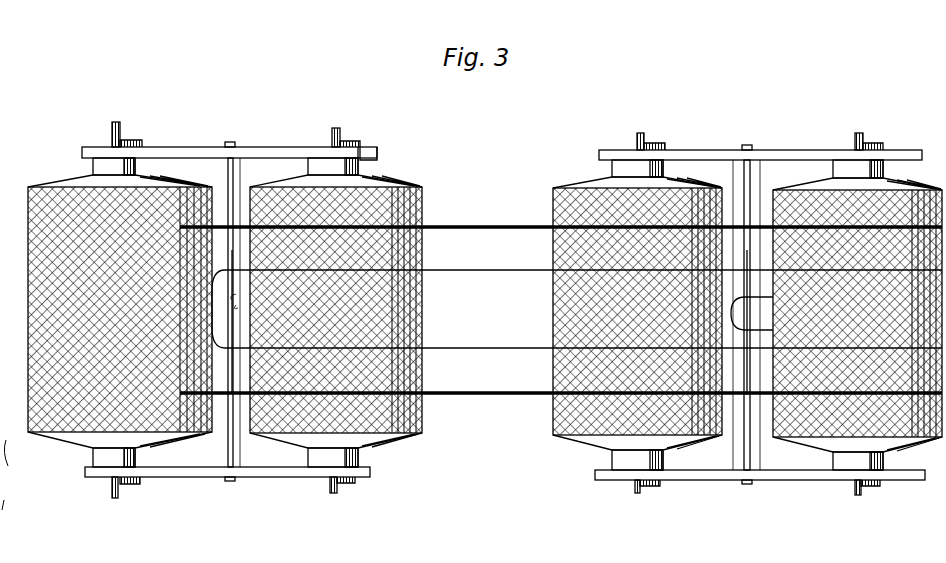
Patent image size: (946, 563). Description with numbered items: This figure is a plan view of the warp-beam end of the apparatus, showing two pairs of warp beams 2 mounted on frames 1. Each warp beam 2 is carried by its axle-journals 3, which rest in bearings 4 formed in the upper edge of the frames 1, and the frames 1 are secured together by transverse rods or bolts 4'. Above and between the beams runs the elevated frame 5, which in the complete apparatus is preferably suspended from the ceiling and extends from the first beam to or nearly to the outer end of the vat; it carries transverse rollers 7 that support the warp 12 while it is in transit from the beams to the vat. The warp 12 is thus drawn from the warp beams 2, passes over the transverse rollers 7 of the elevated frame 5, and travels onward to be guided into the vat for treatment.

The frames 1 is at (206, 156).
The warp beams 2 is at (90, 161).
The axle-journals 3 is at (118, 124).
The bearings 4 is at (472, 322).
The transverse rods or bolts 4' is at (502, 314).
The elevated frame 5 is at (507, 226).
The transverse rollers 7 is at (231, 400).
The warp 12 is at (496, 346).